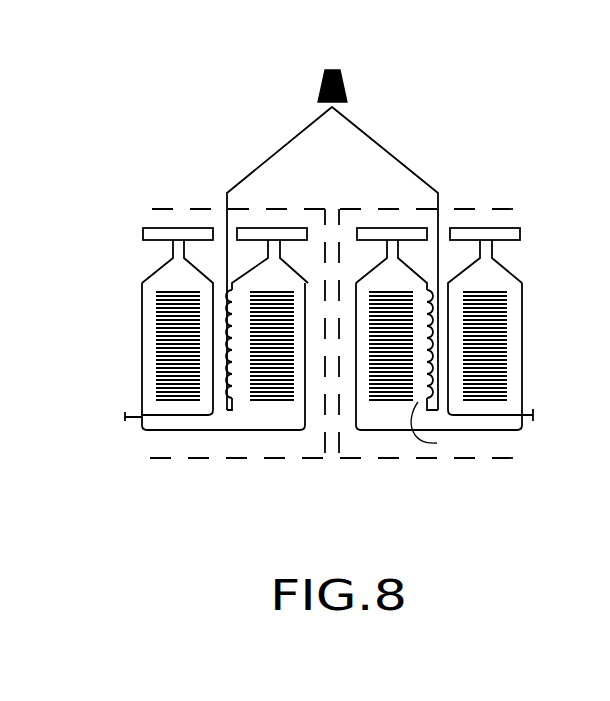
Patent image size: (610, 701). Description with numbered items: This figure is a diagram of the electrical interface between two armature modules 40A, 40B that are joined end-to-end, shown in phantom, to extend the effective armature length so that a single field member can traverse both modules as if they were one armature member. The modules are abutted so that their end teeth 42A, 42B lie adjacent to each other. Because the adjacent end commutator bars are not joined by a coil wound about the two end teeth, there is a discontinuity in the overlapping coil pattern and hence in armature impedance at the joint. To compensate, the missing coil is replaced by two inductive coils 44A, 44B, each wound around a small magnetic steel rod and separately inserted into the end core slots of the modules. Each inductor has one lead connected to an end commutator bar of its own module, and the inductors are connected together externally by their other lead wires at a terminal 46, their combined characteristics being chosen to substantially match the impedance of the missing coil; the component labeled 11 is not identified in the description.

The piezoelectric transducer element 11 is at (155, 350).
The armature module 40A is at (202, 209).
The armature module 40B is at (495, 209).
The end tooth 42A is at (270, 405).
The end tooth 42B is at (390, 402).
The inductive coil 44A is at (242, 398).
The inductive coil 44B is at (433, 303).
The connector terminal 46 is at (342, 80).